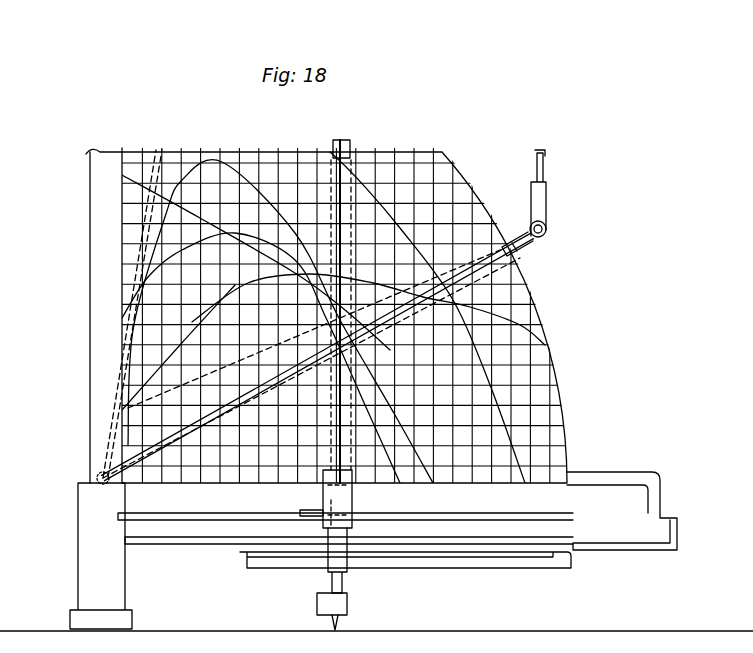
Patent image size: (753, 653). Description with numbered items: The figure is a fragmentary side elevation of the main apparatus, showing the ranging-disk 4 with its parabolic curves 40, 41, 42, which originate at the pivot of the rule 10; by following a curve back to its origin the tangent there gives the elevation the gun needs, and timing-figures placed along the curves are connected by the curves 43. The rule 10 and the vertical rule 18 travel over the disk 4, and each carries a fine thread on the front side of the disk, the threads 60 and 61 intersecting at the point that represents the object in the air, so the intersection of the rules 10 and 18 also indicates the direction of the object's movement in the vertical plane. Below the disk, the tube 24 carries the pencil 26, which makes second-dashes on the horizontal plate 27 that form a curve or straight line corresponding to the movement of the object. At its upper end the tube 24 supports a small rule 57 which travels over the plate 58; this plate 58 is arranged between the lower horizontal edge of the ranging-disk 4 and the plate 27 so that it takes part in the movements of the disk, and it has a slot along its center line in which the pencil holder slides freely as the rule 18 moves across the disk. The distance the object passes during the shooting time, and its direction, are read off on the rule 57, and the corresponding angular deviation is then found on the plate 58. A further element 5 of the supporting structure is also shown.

The ranging-disk 4 is at (542, 322).
The plate 5 is at (478, 563).
The rule 10 is at (521, 248).
The rule 18 is at (348, 150).
The tube 24 is at (345, 585).
The pencil 26 is at (342, 623).
The horizontal plate 27 is at (507, 634).
The parabolic curve 40 is at (280, 321).
The parabolic curve 41 is at (261, 358).
The parabolic curve 42 is at (333, 342).
The curves connecting timing-figures 43 is at (157, 150).
The rule 57 is at (321, 511).
The plate 58 is at (592, 522).
The thread 60 is at (427, 317).
The thread 61 is at (488, 245).